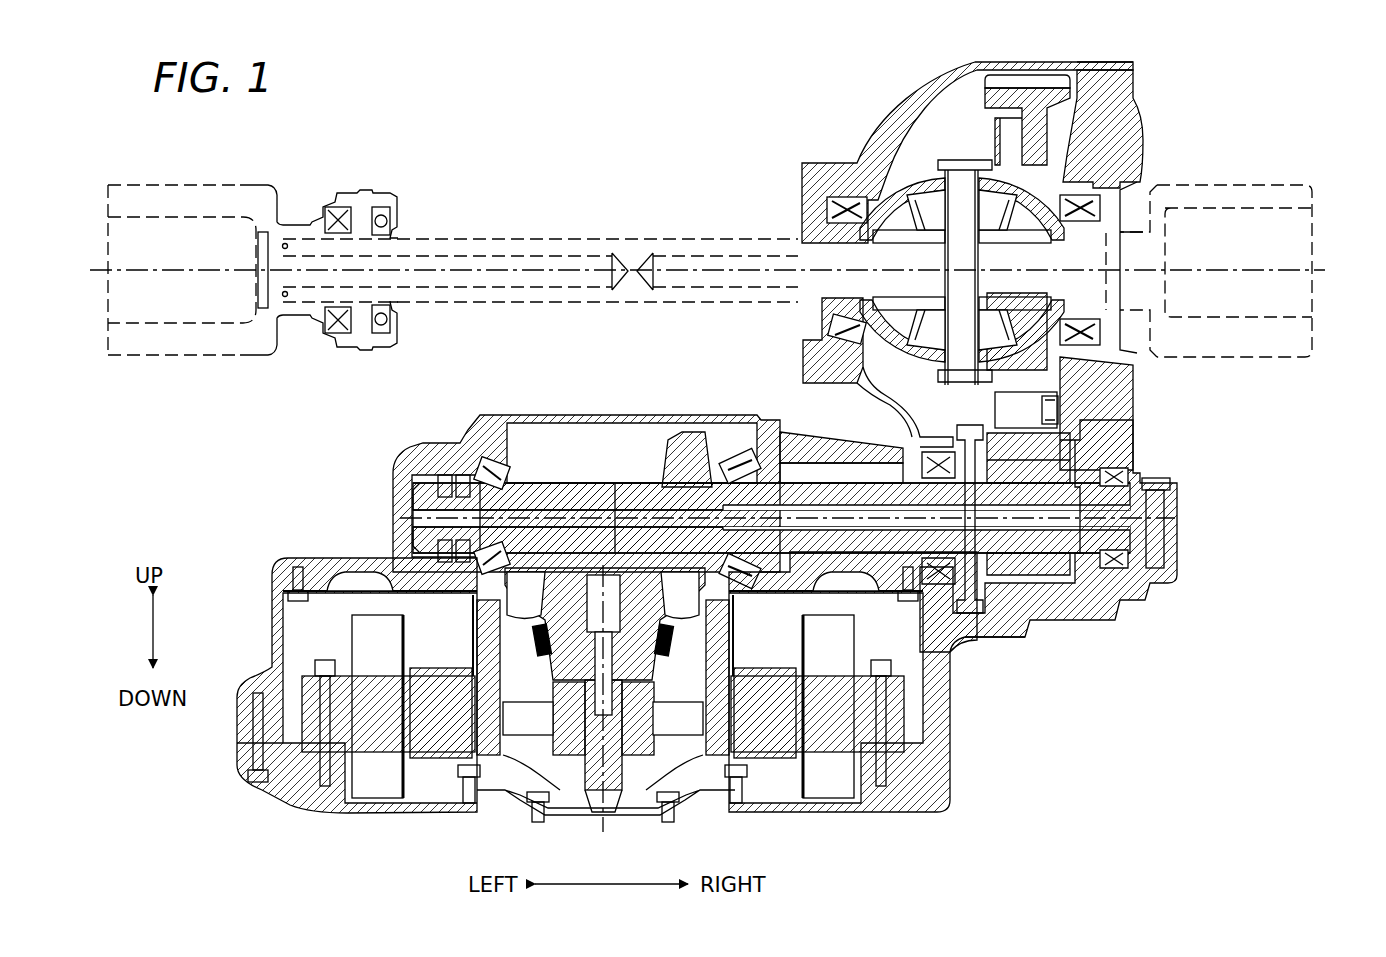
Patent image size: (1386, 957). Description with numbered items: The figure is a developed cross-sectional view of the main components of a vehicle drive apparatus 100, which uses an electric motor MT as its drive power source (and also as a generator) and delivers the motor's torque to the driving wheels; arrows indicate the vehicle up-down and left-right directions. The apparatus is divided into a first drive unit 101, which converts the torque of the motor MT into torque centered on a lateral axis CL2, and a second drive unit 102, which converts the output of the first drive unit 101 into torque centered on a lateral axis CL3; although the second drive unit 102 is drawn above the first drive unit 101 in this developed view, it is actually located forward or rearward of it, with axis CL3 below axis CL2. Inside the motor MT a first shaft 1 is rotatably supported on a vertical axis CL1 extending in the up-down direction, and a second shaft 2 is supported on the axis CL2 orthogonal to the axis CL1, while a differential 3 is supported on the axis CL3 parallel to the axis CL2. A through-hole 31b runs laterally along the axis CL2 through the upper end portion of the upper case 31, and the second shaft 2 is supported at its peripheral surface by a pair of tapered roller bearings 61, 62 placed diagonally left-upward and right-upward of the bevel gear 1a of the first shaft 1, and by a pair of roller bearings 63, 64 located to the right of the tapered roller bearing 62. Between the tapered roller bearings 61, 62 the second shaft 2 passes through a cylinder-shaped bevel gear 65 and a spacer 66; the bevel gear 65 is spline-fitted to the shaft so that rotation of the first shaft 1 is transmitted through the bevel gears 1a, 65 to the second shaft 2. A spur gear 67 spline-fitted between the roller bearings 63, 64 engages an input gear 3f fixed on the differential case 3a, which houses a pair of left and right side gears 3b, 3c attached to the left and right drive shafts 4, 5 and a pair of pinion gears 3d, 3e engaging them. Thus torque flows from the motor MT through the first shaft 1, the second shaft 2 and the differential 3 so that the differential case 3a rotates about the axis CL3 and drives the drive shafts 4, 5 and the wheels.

The first shaft 1 is at (565, 820).
The bevel gear 1a is at (535, 578).
The second shaft 2 is at (528, 497).
The differential 3 is at (993, 250).
The differential case 3a is at (895, 188).
The left side gear 3b is at (884, 320).
The right side gear 3c is at (1110, 357).
The pinion gear 3d is at (922, 240).
The pinion gear 3e is at (992, 345).
The input gear 3f is at (1025, 80).
The left drive shaft 4 is at (524, 238).
The right drive shaft 5 is at (1122, 225).
The upper case 31 is at (268, 632).
The through-hole 31b is at (827, 475).
The tapered roller bearing 61 is at (490, 470).
The tapered roller bearing 62 is at (740, 455).
The roller bearing 63 is at (930, 458).
The roller bearing 64 is at (1120, 480).
The bevel gear 65 is at (682, 445).
The spacer 66 is at (618, 483).
The spur gear 67 is at (1045, 580).
The vehicle drive apparatus 100 is at (1163, 75).
The first drive unit 101 is at (1040, 680).
The second drive unit 102 is at (1210, 400).
The electric motor MT is at (766, 782).
The vertical axis CL1 is at (605, 709).
The lateral axis CL2 is at (400, 518).
The lateral axis CL3 is at (729, 271).